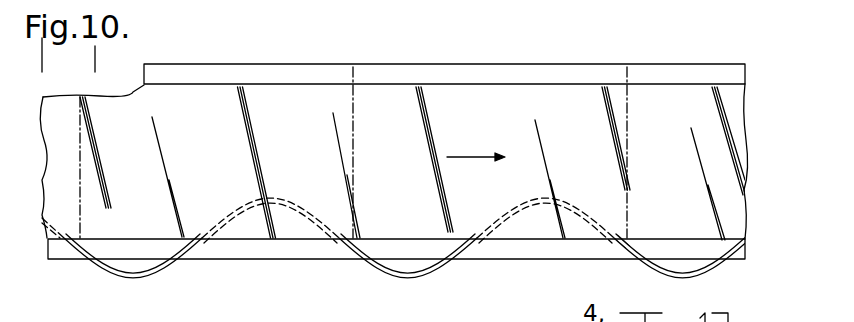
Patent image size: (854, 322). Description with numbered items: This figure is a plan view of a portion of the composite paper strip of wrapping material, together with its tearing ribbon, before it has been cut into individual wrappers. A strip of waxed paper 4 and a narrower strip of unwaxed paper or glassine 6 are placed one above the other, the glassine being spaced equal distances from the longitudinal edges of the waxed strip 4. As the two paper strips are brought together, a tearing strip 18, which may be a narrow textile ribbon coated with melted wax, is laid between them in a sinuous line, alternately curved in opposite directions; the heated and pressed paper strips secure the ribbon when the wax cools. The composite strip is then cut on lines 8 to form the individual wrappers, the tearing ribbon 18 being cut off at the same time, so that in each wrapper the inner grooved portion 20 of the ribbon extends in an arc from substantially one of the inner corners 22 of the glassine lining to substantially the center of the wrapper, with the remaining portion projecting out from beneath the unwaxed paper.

The strip of waxed paper 4 is at (694, 65).
The strip of unwaxed paper or glassine 6 is at (533, 233).
The cutting lines 8 is at (352, 77).
The tearing strip 18 is at (133, 277).
The inner grooved portion of the tearing ribbon 20 is at (278, 195).
The inner corner of the glassine lining 22 is at (622, 249).